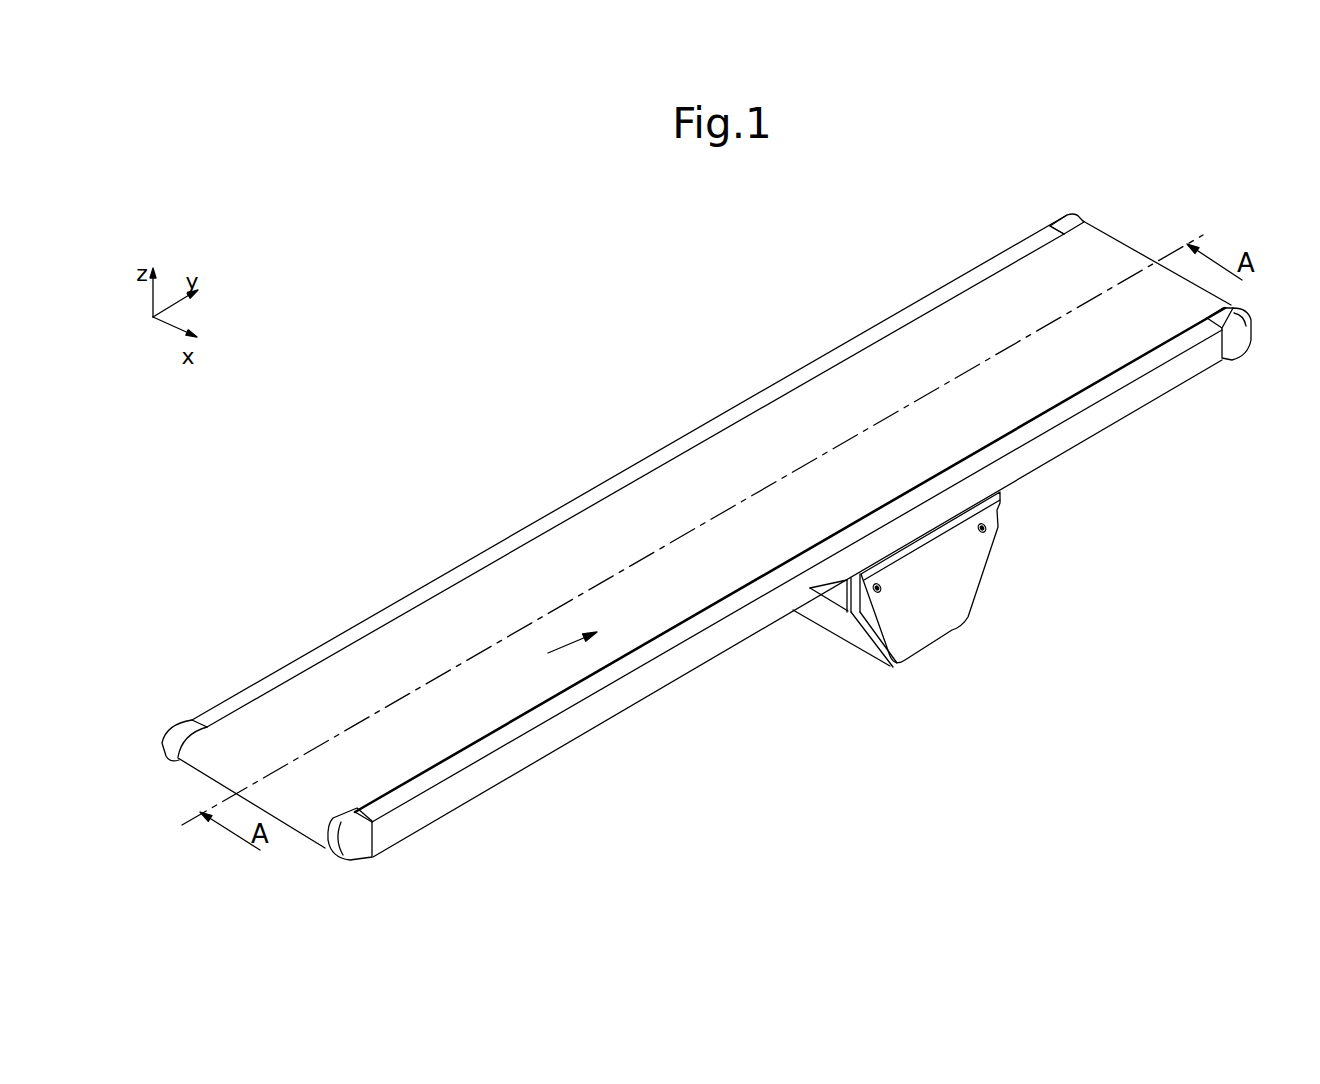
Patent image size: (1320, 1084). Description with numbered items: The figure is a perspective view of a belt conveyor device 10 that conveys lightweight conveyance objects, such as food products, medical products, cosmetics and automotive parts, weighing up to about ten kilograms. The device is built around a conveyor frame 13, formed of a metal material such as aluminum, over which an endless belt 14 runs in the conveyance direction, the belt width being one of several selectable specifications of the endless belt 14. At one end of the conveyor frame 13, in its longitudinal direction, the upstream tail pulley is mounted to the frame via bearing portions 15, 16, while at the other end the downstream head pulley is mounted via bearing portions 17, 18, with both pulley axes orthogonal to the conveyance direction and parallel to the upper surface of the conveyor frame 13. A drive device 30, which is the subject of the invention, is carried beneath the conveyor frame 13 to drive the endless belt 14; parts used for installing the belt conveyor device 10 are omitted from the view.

The belt conveyor device 10 is at (466, 497).
The conveyor frame 13 is at (698, 652).
The endless belt 14 is at (718, 445).
The bearing portion 15 is at (187, 730).
The bearing portion 16 is at (355, 843).
The bearing portion 17 is at (1063, 224).
The bearing portion 18 is at (1238, 335).
The drive device 30 is at (982, 580).